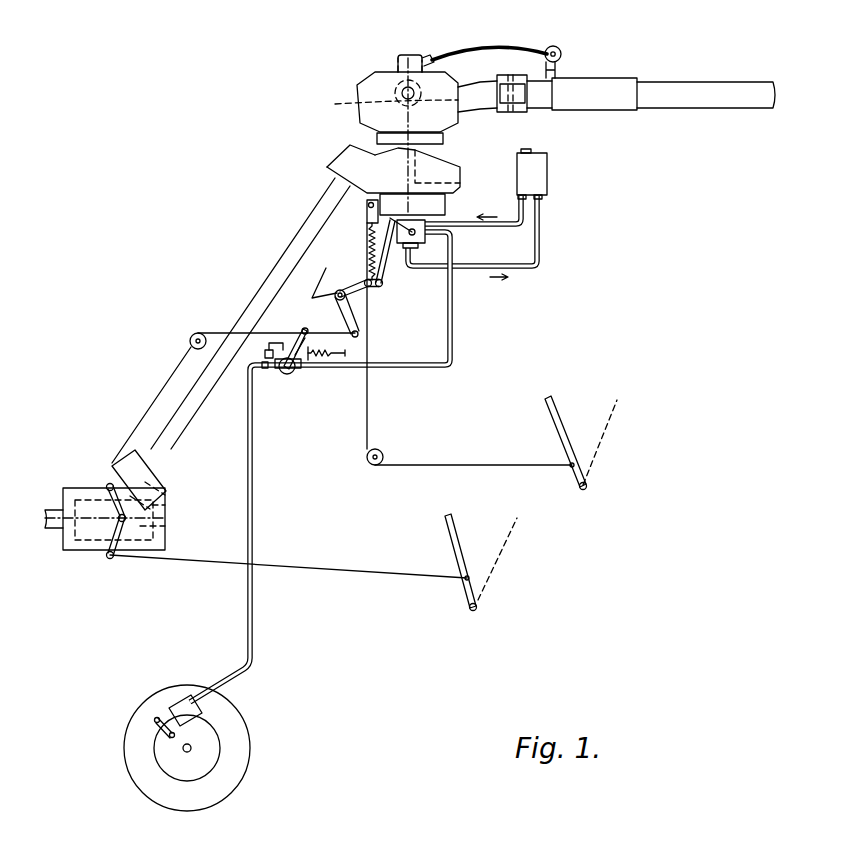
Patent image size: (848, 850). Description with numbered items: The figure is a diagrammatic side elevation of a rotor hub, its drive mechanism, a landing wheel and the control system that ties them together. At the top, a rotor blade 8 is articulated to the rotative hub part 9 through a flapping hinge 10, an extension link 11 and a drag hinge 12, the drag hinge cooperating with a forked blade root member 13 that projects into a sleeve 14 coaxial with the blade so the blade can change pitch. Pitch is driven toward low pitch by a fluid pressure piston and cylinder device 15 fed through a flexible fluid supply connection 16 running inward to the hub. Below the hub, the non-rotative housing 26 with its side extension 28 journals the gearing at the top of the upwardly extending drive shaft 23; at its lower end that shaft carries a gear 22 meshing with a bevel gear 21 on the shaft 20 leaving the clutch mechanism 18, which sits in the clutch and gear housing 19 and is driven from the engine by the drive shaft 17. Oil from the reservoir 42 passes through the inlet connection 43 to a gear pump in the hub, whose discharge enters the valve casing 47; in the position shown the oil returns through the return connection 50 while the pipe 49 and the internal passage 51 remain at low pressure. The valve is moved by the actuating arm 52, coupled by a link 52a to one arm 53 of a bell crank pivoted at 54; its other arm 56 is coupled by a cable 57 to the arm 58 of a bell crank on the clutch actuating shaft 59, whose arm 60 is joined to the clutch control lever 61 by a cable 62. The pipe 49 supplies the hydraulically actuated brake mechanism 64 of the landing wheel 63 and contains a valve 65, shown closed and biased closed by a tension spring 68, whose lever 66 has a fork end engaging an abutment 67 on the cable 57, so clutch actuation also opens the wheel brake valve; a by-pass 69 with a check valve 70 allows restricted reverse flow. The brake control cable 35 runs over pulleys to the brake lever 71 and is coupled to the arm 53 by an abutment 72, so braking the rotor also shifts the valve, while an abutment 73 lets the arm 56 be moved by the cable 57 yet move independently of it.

The rotor blade 8 is at (712, 84).
The rotative hub part 9 is at (360, 87).
The flapping hinge 10 is at (388, 136).
The extension link 11 is at (481, 92).
The drag hinge 12 is at (515, 113).
The forked blade root member 13 is at (530, 105).
The sleeve 14 is at (603, 74).
The fluid pressure piston and cylinder device 15 is at (561, 54).
The flexible fluid supply connection 16 is at (490, 46).
The drive shaft 17 is at (55, 510).
The clutch mechanism 18 is at (80, 551).
The clutch and gear housing 19 is at (165, 545).
The shaft 20 is at (165, 508).
The bevel gear 21 is at (165, 526).
The gear 22 is at (160, 483).
The upwardly extending drive shaft 23 is at (252, 300).
The non-rotative housing 26 is at (455, 180).
The housing extension 28 is at (350, 158).
The brake control cable 35 is at (368, 217).
The reservoir 42 is at (548, 172).
The inlet connection 43 is at (490, 226).
The valve casing 47 is at (423, 243).
The pipe 49 is at (455, 350).
The return connection 50 is at (476, 270).
The internal passage 51 is at (452, 190).
The actuating arm 52 is at (386, 250).
The link 52a is at (384, 284).
The bell crank arm 53 is at (376, 287).
The bell crank pivot 54 is at (340, 290).
The bell crank arm 56 is at (346, 320).
The cable 57 is at (213, 333).
The bell crank arm 58 is at (107, 486).
The clutch actuating shaft 59 is at (124, 522).
The bell crank arm 60 is at (109, 557).
The clutch control lever 61 is at (452, 530).
The cable 62 is at (360, 571).
The landing wheel 63 is at (250, 725).
The hydraulically actuated brake mechanism 64 is at (178, 698).
The valve 65 is at (371, 246).
The lever 66 is at (292, 342).
The abutment 67 is at (305, 328).
The tension spring 68 is at (328, 357).
The by-pass 69 is at (265, 352).
The check valve 70 is at (262, 365).
The brake lever 71 is at (588, 444).
The abutment 72 is at (365, 283).
The abutment 73 is at (358, 334).